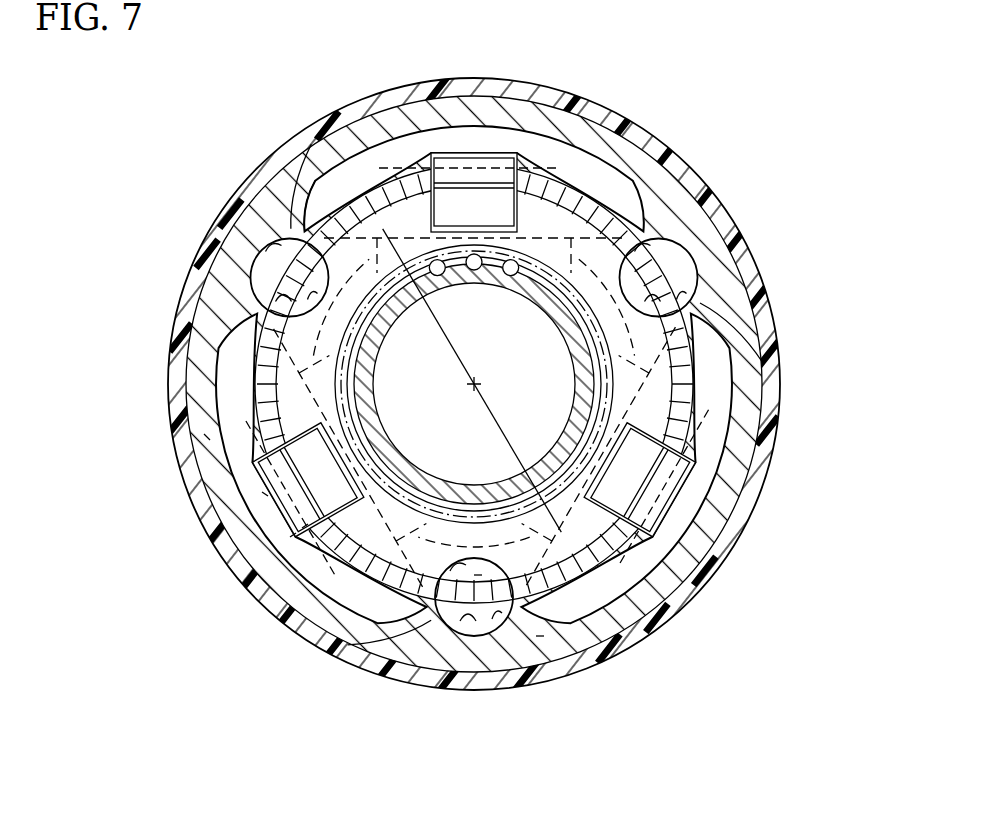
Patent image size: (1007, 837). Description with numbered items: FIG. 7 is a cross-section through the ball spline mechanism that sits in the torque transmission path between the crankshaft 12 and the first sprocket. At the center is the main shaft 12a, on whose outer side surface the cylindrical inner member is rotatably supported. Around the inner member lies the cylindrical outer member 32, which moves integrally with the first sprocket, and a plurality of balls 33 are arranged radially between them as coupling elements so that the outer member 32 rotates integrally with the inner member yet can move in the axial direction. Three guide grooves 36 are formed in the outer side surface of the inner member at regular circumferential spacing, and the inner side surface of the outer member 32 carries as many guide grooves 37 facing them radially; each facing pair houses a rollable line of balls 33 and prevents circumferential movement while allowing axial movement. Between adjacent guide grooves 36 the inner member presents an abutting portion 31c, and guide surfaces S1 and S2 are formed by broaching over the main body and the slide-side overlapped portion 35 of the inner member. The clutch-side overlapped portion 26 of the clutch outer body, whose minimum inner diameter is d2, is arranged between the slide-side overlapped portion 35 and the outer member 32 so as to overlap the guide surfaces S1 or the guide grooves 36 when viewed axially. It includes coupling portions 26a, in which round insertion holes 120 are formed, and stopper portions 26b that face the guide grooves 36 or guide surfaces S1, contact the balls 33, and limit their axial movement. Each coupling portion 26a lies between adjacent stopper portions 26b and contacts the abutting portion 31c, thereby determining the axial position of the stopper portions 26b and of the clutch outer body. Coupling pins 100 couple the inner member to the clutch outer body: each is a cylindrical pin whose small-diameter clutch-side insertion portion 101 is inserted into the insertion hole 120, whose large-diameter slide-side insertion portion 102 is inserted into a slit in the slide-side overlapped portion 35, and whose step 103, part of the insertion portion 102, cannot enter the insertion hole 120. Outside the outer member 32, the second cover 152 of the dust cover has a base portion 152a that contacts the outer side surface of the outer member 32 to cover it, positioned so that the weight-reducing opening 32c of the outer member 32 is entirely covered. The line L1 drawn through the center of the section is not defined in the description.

The crankshaft 12 is at (474, 384).
The main shaft 12a is at (474, 384).
The clutch-side overlapped portion 26 is at (475, 460).
The coupling portion 26a is at (516, 405).
The stopper portion 26b is at (475, 460).
The abutting portion 31c is at (554, 380).
The outer member 32 is at (481, 443).
The opening 32c is at (168, 201).
The ball 33 is at (478, 445).
The slide-side overlapped portion 35 is at (270, 158).
The guide groove 36 is at (485, 473).
The guide groove 37 is at (485, 460).
The coupling pin 100 is at (494, 322).
The clutch-side insertion portion 101 is at (246, 627).
The slide-side insertion portion 102 is at (150, 467).
The step 103 is at (264, 646).
The insertion hole 120 is at (197, 532).
The second cover 152 is at (474, 372).
The base portion 152a is at (474, 372).
The guide surface S1 is at (465, 510).
The guide surface S2 is at (578, 697).
The minimum inner diameter d2 is at (472, 380).
The center axis L1 is at (501, 371).